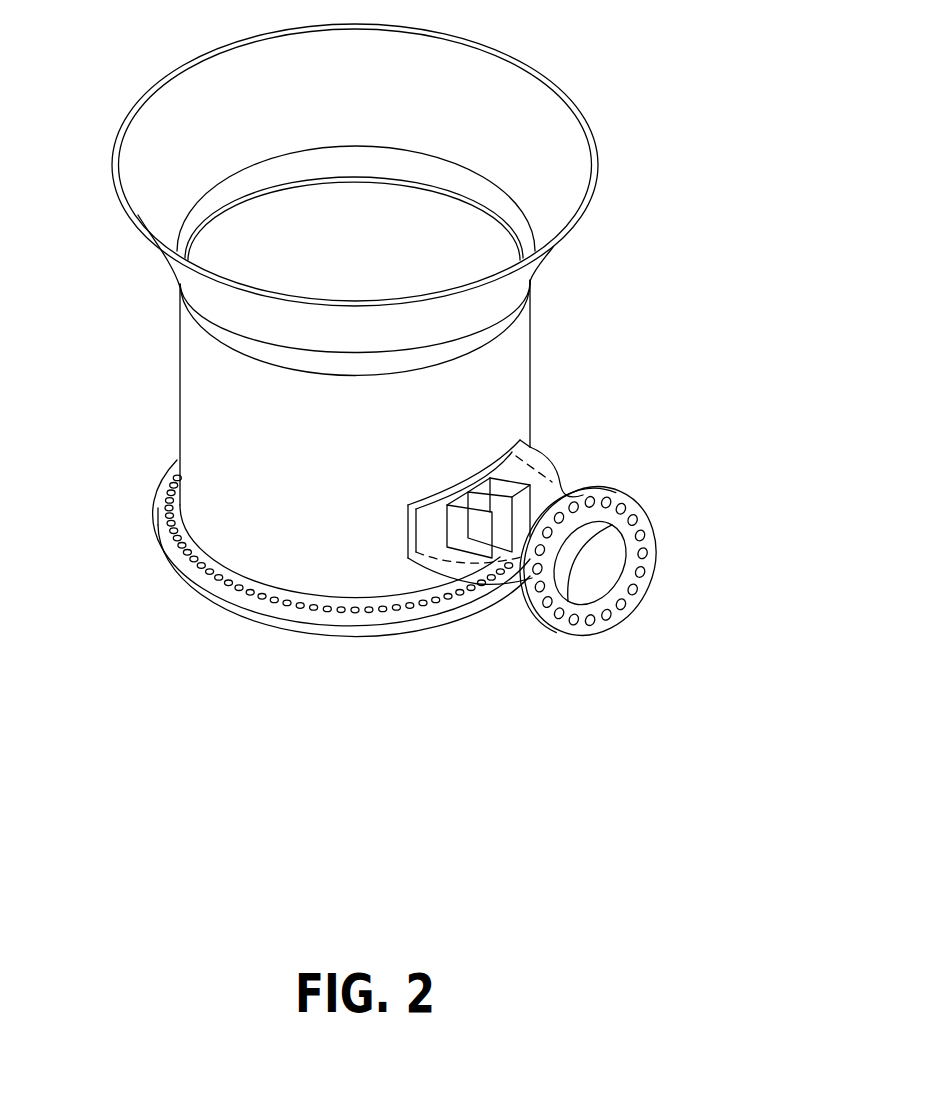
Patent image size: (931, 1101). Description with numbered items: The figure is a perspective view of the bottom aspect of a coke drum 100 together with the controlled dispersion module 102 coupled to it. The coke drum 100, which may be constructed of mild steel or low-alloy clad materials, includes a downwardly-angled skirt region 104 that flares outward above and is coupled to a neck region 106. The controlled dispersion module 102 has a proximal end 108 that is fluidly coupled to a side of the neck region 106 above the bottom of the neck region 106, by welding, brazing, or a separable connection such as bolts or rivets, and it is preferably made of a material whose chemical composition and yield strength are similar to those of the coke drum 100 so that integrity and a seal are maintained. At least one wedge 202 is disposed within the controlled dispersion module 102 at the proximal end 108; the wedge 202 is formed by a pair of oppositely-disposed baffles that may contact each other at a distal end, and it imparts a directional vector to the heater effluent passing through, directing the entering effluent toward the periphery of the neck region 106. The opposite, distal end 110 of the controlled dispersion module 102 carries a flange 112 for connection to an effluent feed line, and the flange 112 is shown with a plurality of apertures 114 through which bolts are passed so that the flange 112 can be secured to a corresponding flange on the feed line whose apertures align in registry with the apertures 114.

The coke drum 100 is at (723, 38).
The controlled dispersion module 102 is at (560, 463).
The downwardly-angled skirt region 104 is at (590, 296).
The neck region 106 is at (533, 343).
The proximal end 108 is at (500, 458).
The distal end 110 is at (590, 597).
The flange 112 is at (648, 500).
The apertures 114 is at (600, 504).
The wedge 202 is at (500, 492).